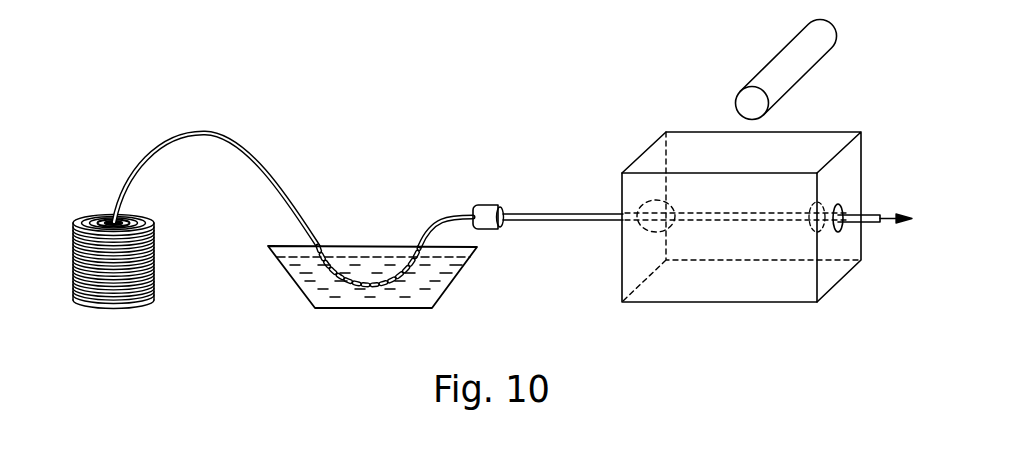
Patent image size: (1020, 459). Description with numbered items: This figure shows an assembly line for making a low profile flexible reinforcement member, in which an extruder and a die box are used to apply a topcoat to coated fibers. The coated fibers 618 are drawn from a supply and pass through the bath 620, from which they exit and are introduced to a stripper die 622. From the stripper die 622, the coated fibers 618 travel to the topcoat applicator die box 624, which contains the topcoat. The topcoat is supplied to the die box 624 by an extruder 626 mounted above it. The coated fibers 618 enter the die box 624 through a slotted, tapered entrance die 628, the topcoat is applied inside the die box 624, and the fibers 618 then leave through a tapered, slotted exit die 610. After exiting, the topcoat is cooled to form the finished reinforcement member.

The tapered, slotted exit die 610 is at (845, 205).
The coated fibers 618 is at (443, 220).
The bath 620 is at (464, 266).
The stripper die 622 is at (487, 205).
The topcoat applicator die box 624 is at (830, 133).
The extruder 626 is at (822, 47).
The slotted, tapered entrance die 628 is at (626, 200).